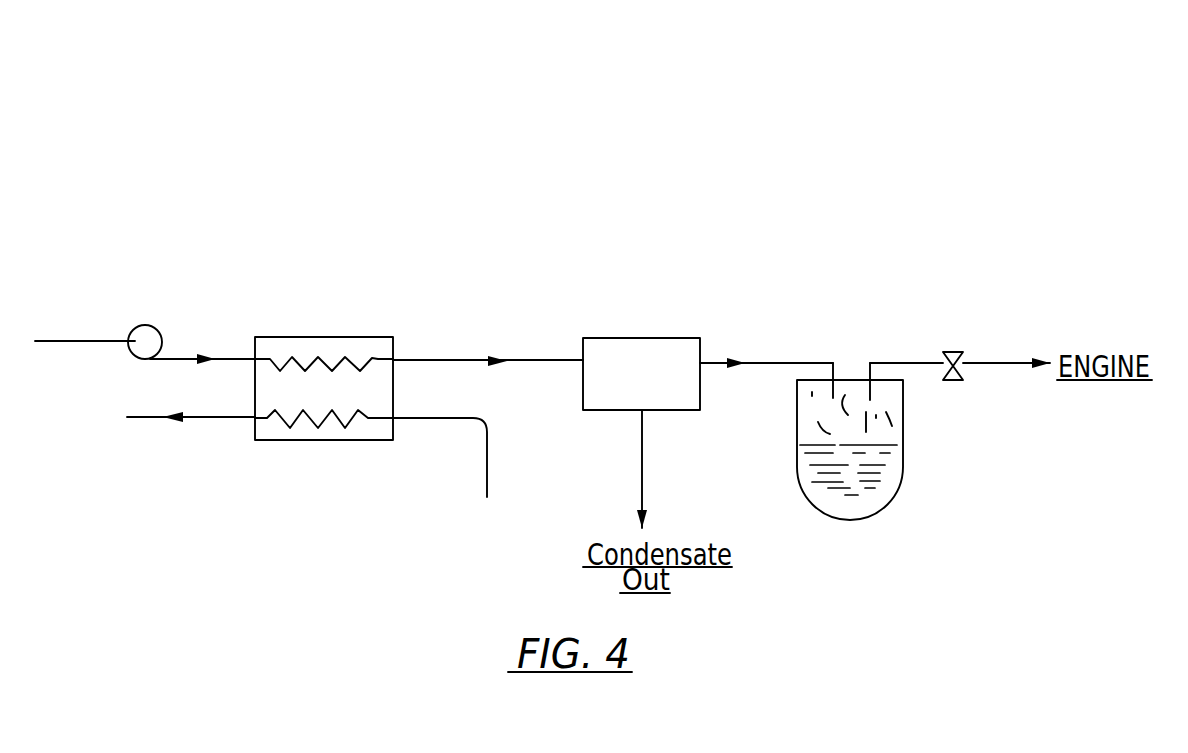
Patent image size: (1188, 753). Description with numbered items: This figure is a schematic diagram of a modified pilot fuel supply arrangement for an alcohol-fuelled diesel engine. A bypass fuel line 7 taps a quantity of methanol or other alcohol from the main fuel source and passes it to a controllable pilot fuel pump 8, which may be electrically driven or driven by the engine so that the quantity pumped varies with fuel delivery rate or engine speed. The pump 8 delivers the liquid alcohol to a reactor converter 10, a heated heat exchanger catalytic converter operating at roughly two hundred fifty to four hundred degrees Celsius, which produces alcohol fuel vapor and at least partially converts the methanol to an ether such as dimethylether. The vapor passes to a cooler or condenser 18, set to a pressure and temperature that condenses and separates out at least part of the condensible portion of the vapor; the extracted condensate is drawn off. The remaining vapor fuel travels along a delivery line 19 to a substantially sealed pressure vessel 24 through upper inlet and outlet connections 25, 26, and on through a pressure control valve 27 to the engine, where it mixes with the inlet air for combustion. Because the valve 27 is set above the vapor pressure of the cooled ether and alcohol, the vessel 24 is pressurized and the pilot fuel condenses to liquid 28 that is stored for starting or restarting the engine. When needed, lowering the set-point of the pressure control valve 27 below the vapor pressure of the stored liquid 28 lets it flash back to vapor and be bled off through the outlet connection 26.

The bypass fuel line 7 is at (80, 341).
The pilot fuel pump 8 is at (157, 331).
The reactor converter 10 is at (393, 337).
The cooler or condenser 18 is at (700, 338).
The delivery line 19 is at (767, 363).
The pressure vessel 24 is at (815, 508).
The inlet connection 25 is at (833, 397).
The outlet connection 26 is at (872, 400).
The pressure control valve 27 is at (960, 351).
The liquid pilot fuel 28 is at (880, 481).